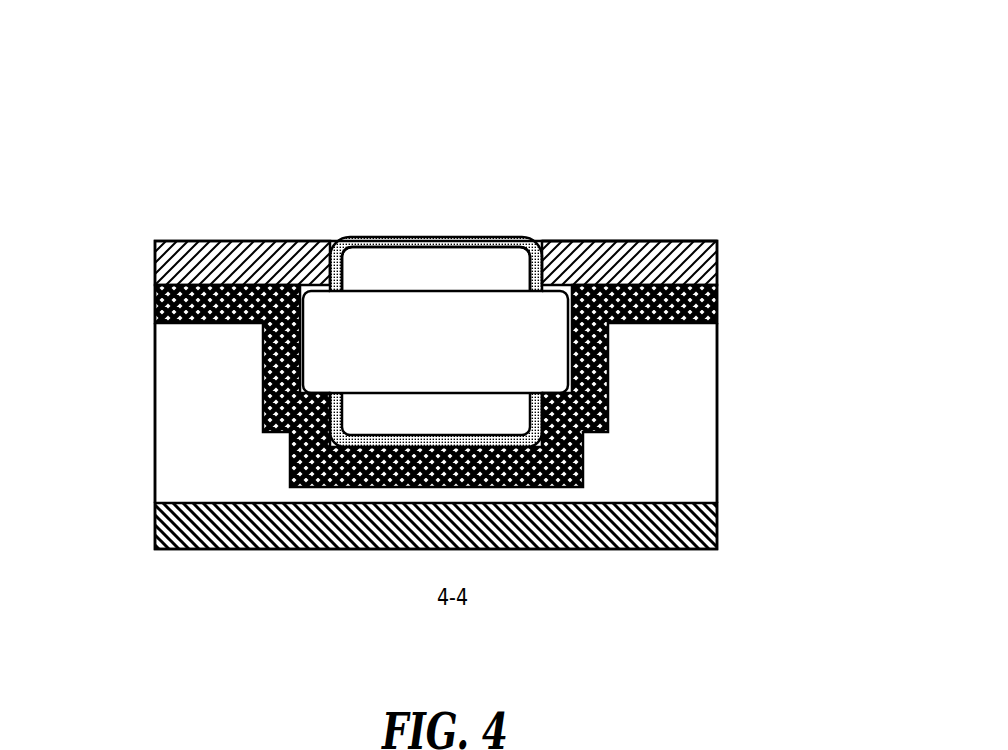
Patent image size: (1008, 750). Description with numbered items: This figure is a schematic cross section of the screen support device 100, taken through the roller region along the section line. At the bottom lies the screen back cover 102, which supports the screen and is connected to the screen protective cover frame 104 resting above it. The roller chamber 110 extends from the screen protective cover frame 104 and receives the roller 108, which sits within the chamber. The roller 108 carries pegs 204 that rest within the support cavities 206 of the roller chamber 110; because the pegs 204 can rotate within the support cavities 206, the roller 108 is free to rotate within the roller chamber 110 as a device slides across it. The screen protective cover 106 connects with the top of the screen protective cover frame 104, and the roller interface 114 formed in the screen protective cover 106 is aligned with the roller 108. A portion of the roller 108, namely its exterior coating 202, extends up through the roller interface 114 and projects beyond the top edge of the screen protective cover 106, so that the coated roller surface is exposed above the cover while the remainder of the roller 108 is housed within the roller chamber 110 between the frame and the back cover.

The screen support device 100 is at (703, 70).
The screen back cover 102 is at (693, 538).
The screen protective cover frame 104 is at (717, 292).
The screen protective cover 106 is at (307, 252).
The roller 108 is at (417, 252).
The roller chamber 110 is at (318, 377).
The roller interface 114 is at (542, 241).
The exterior coating 202 is at (513, 240).
The pegs 204 is at (595, 298).
The support cavities 206 is at (590, 268).